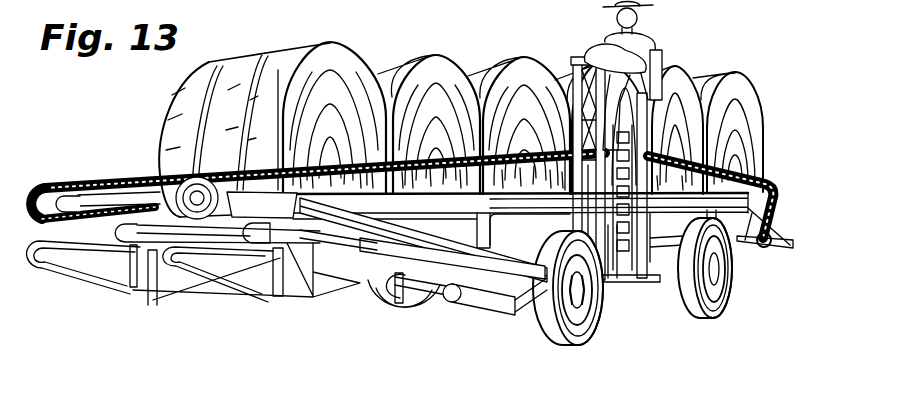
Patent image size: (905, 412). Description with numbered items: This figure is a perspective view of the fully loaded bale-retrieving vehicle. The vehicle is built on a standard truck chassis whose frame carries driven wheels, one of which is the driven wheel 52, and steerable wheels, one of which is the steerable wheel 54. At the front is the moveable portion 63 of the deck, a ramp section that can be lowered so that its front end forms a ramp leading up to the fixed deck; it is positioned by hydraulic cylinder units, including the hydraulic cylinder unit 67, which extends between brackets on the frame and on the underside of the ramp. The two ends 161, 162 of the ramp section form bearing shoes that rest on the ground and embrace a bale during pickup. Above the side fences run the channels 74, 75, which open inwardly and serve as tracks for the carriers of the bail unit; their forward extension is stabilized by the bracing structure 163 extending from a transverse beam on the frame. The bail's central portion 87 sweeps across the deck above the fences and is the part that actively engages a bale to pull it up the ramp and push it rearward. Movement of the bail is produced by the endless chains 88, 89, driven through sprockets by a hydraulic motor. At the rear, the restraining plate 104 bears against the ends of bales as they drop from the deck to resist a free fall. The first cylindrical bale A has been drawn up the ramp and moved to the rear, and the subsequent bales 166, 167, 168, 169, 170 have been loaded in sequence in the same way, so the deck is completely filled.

The driven wheel 52 is at (693, 307).
The steerable wheel 54 is at (547, 333).
The moveable portion of the deck structure (ramp section) 63 is at (307, 290).
The hydraulic cylinder unit 67 is at (477, 310).
The channel 74 is at (247, 212).
The channel 75 is at (132, 182).
The central portion of the bail 87 is at (147, 272).
The endless chain 88 is at (747, 173).
The endless chain 89 is at (72, 182).
The restraining plate 104 is at (788, 240).
The end of the ramp section 161 is at (73, 258).
The end of the ramp section 162 is at (213, 263).
The bracing structure 163 is at (377, 227).
The bale 166 is at (677, 67).
The bale 167 is at (557, 70).
The bale 168 is at (507, 57).
The bale 169 is at (403, 55).
The bale 170 is at (328, 43).
The bale A is at (727, 67).